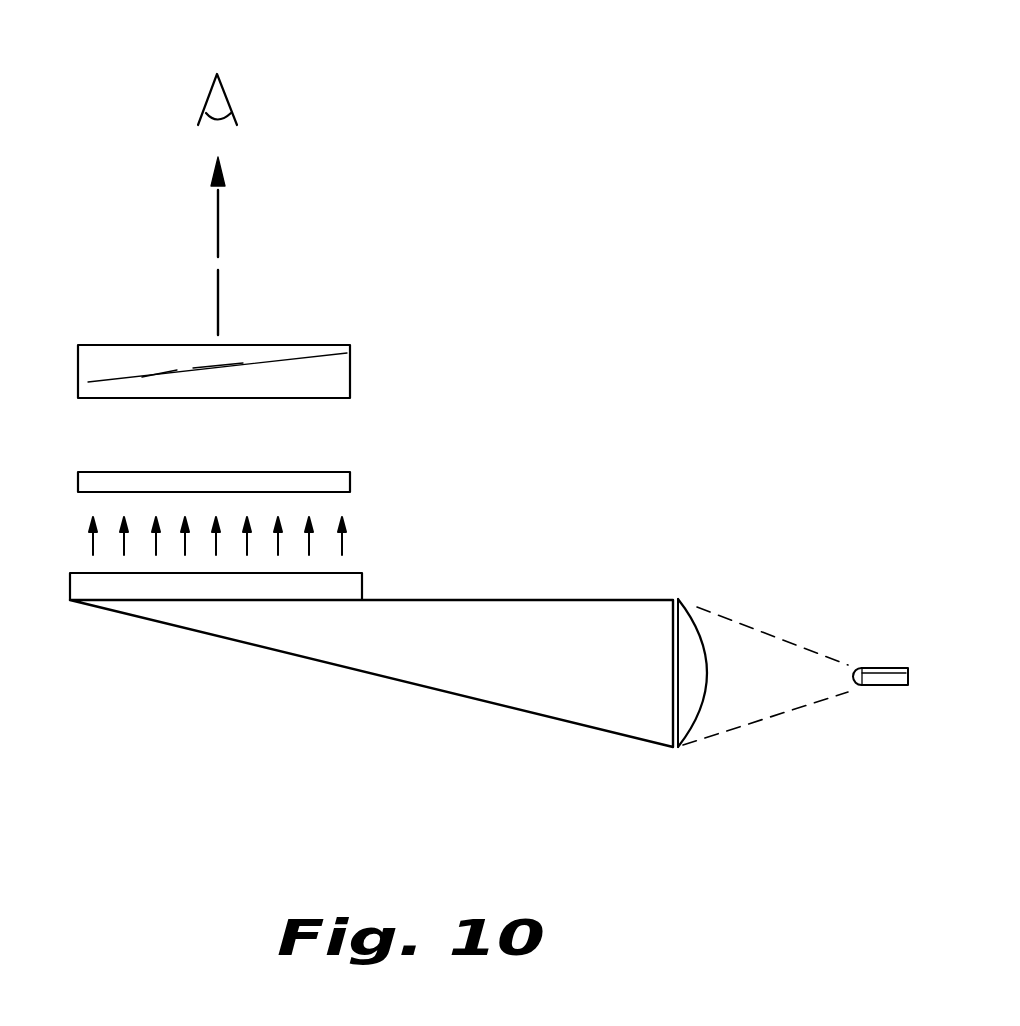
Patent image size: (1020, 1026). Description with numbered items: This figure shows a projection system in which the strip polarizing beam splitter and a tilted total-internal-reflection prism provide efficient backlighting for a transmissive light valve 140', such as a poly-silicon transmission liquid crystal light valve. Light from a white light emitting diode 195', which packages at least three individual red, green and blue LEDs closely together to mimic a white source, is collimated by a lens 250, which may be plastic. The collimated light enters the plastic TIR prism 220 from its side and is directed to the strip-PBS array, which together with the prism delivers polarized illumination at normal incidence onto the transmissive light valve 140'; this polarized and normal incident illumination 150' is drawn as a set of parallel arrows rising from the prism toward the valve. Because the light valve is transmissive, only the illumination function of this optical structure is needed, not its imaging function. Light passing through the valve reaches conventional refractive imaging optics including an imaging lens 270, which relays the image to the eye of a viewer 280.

The viewer 280 is at (251, 107).
The imaging lens 270 is at (350, 362).
The transmissive light valve 140' is at (268, 447).
The polarized and normal incident illumination 150' is at (277, 501).
The TIR prism 220 is at (505, 590).
The lens 250 is at (686, 628).
The white light emitting diode 195' is at (797, 693).